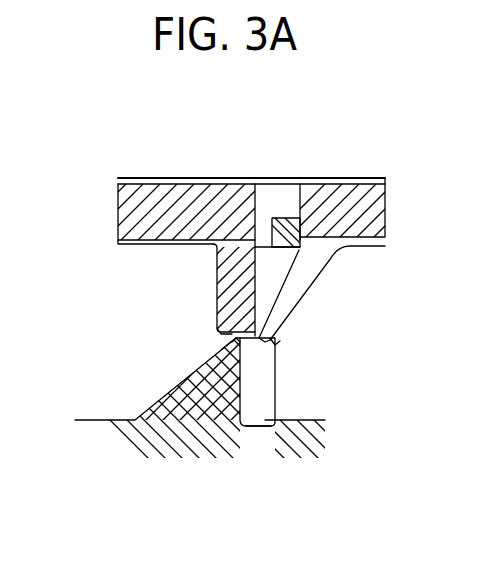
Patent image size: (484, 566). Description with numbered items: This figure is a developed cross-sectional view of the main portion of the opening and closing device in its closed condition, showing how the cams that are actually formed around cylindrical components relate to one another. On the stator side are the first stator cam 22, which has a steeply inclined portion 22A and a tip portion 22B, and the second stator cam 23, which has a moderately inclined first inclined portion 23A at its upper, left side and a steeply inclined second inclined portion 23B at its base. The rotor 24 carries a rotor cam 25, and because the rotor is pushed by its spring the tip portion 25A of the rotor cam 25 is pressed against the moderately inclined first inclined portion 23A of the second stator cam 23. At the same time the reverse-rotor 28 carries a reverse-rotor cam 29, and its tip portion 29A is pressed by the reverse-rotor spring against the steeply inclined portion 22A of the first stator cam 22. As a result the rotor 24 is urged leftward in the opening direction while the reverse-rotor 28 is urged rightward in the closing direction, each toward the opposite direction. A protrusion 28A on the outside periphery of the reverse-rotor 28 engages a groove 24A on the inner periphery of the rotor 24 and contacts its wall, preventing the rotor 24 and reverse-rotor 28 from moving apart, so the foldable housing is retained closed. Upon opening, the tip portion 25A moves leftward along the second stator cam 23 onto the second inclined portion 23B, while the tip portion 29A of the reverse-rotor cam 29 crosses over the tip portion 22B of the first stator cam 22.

The first stator cam 22 is at (268, 388).
The steeply inclined portion 22A is at (276, 345).
The tip portion of first stator cam 22B is at (248, 350).
The second stator cam 23 is at (162, 398).
The moderately inclined first inclined portion 23A is at (230, 344).
The second inclined portion 23B is at (230, 347).
The rotor 24 is at (135, 210).
The groove 24A is at (266, 196).
The rotor cam 25 is at (228, 278).
The tip portion of rotor cam 25A is at (221, 330).
The reverse-rotor 28 is at (372, 178).
The protrusion 28A is at (284, 232).
The reverse-rotor cam 29 is at (307, 267).
The tip portion of reverse-rotor cam 29A is at (268, 334).